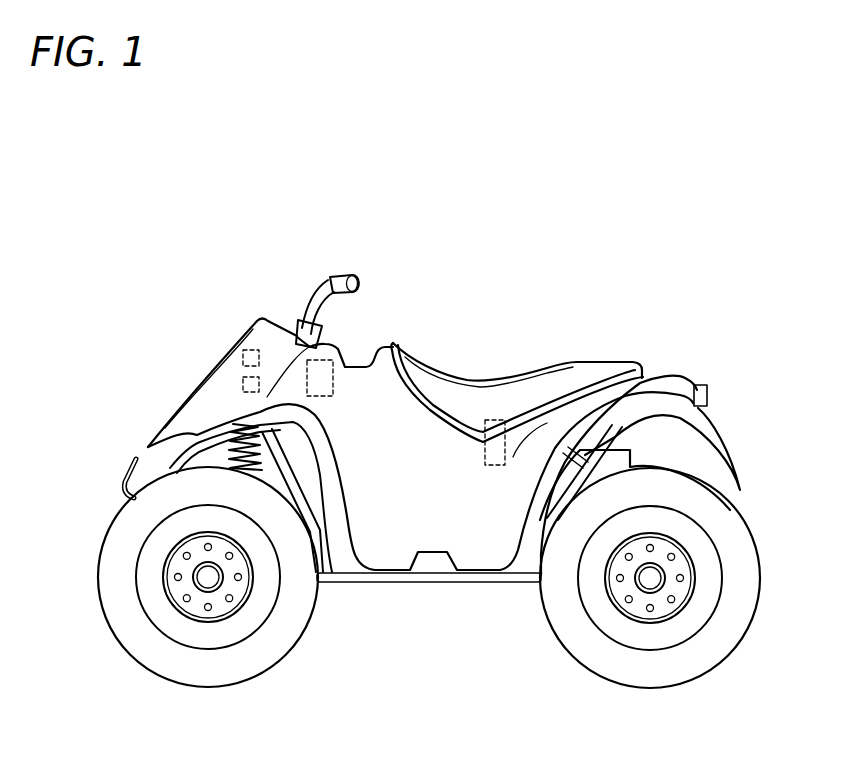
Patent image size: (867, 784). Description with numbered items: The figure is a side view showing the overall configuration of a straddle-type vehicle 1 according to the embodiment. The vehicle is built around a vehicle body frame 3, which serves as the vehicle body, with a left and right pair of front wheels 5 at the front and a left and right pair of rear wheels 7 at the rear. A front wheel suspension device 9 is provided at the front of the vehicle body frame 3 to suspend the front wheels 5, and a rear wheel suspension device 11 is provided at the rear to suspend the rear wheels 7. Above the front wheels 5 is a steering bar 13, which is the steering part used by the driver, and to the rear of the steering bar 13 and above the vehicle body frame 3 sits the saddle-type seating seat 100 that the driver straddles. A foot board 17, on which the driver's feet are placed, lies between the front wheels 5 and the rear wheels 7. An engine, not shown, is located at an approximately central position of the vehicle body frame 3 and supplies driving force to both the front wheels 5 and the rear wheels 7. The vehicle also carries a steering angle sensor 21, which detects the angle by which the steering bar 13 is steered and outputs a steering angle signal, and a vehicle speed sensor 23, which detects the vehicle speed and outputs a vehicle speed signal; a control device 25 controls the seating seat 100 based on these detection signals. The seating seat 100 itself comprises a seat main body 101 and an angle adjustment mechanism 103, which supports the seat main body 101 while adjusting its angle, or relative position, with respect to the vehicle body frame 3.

The straddle-type vehicle 1 is at (196, 301).
The vehicle body frame 3 is at (395, 500).
The front wheels 5 is at (277, 663).
The rear wheels 7 is at (722, 665).
The front wheel suspension device 9 is at (232, 440).
The rear wheel suspension device 11 is at (630, 467).
The steering bar 13 is at (343, 278).
The foot board 17 is at (440, 543).
The steering angle sensor 21 is at (243, 385).
The vehicle speed sensor 23 is at (252, 350).
The control device 25 is at (318, 360).
The seating seat 100 is at (494, 366).
The seat main body 101 is at (547, 367).
The angle adjustment mechanism 103 is at (497, 420).